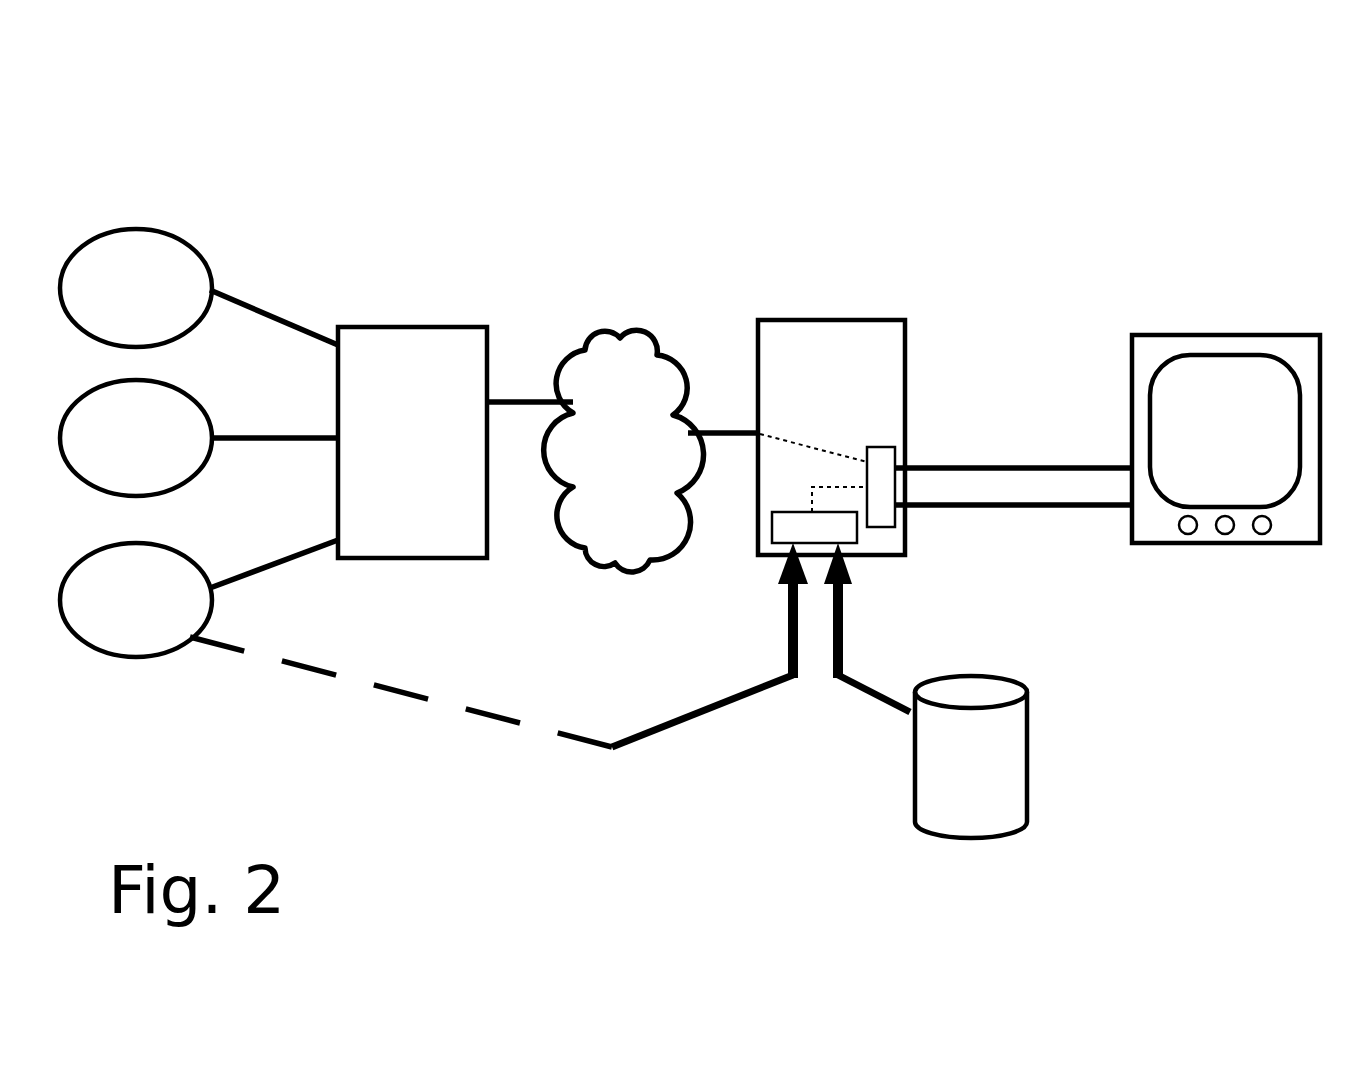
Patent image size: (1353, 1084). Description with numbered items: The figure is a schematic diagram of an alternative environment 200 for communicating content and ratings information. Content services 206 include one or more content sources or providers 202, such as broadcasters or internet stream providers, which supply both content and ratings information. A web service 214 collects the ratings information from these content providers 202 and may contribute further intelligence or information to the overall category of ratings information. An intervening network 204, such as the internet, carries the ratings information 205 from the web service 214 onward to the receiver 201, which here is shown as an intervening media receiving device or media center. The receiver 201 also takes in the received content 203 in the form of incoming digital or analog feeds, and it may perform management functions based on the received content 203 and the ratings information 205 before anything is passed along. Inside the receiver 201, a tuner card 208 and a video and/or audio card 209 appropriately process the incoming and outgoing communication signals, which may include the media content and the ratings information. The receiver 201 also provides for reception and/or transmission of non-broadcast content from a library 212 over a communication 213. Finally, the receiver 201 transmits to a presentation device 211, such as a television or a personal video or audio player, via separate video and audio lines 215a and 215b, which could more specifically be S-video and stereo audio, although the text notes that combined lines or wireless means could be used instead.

The alternative environment 200 is at (1130, 138).
The receiver 201 is at (827, 438).
The content sources or providers 202 is at (152, 225).
The received content 203 is at (684, 726).
The intervening network 204 is at (632, 315).
The ratings information 205 is at (713, 426).
The content services 206 is at (663, 299).
The tuner card 208 is at (766, 532).
The video and/or audio card 209 is at (887, 532).
The presentation device 211 is at (1232, 332).
The library 212 is at (994, 682).
The communication 213 is at (893, 716).
The web service 214 is at (389, 324).
The video line 215a is at (1087, 461).
The audio line 215b is at (1107, 512).